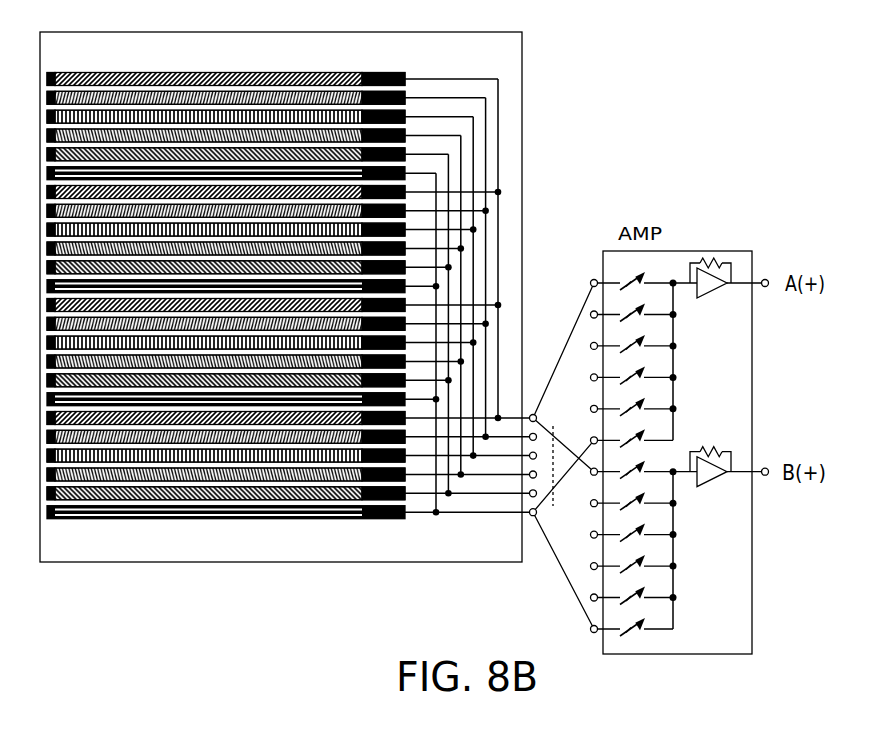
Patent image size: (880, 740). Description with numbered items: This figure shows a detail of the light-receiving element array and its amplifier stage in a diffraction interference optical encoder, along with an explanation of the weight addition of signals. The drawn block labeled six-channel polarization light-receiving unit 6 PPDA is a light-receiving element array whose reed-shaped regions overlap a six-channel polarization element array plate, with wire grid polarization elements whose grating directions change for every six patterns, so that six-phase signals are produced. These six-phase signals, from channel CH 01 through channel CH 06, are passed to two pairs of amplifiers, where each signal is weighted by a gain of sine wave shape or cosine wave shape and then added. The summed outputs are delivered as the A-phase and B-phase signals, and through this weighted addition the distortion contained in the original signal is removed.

The PPDA (six-channel position-sensitive photodiode array) 6 is at (286, 297).
The CH01 output channel node of PPDA 01 is at (499, 377).
The CH06 output channel node of PPDA 06 is at (499, 534).